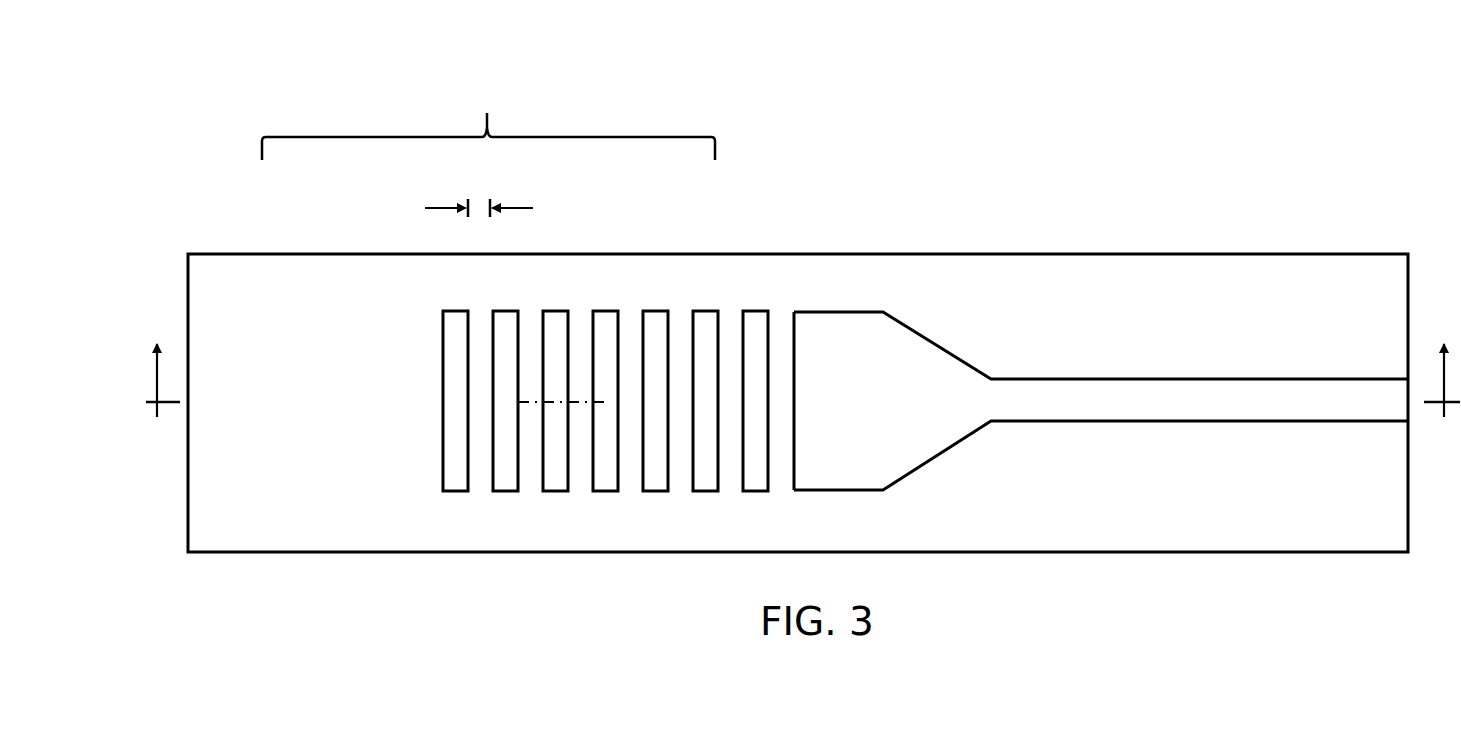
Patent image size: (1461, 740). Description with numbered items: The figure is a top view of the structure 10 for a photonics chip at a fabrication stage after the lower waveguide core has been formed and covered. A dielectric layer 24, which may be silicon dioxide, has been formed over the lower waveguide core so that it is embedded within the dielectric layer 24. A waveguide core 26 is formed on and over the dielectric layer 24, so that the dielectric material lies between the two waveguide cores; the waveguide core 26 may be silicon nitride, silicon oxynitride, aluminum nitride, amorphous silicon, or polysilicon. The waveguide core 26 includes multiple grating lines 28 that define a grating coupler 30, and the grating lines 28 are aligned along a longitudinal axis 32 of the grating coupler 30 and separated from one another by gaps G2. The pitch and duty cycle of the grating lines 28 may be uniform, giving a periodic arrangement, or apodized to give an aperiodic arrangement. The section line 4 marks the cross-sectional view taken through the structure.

The structure 10 is at (236, 99).
The dielectric layer 24 is at (244, 510).
The waveguide core 26 is at (418, 317).
The grating lines 28 is at (510, 447).
The grating coupler 30 is at (488, 123).
The longitudinal axis 32 is at (575, 400).
The gaps G2 is at (470, 194).
The section line 4- 4 is at (803, 364).